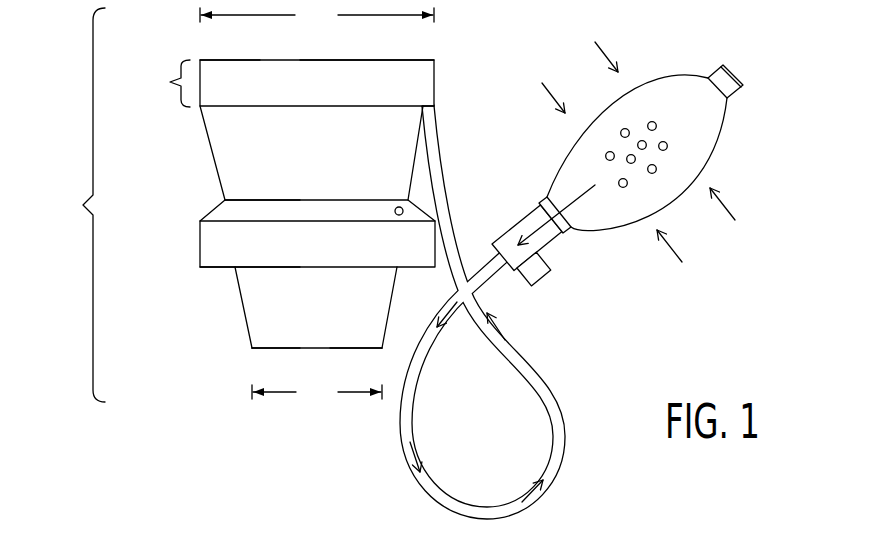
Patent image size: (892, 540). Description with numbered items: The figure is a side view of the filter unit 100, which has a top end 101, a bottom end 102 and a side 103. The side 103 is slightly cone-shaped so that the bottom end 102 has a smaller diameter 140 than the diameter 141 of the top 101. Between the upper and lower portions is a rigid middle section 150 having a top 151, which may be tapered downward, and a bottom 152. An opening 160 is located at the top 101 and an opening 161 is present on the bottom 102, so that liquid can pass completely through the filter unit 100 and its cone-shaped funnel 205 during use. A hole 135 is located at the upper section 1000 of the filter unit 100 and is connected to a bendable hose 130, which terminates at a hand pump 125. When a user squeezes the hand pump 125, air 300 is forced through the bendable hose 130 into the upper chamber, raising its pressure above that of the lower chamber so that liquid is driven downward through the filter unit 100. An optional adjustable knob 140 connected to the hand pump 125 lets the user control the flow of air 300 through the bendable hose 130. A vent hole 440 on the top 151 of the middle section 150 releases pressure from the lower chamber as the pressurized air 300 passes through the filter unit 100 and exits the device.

The filter unit 100 is at (75, 205).
The upper section 1000 is at (275, 83).
The top end 101 is at (243, 59).
The bottom end 102 is at (285, 350).
The side 103 is at (232, 162).
The hand pump 125 is at (692, 160).
The bendable hose 130 is at (557, 409).
The hole 135 is at (430, 117).
The adjustable knob 140 is at (541, 283).
The diameter 141 is at (317, 15).
The middle section 150 is at (210, 248).
The top of the middle section 151 is at (224, 199).
The bottom of the middle section 152 is at (217, 270).
The opening 160 is at (355, 59).
The opening 161 is at (338, 350).
The cone-shaped funnel 205 is at (405, 152).
The air 300 is at (656, 124).
The vent hole 440 is at (404, 208).